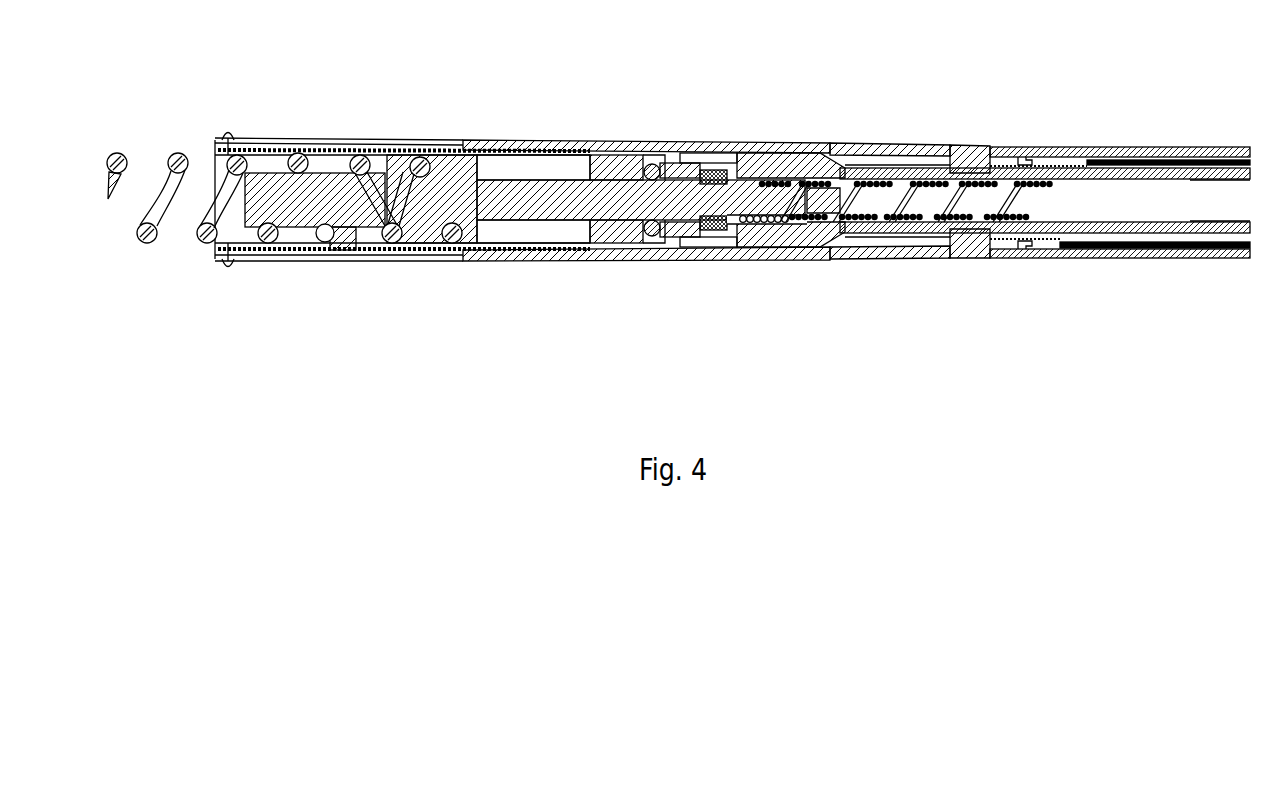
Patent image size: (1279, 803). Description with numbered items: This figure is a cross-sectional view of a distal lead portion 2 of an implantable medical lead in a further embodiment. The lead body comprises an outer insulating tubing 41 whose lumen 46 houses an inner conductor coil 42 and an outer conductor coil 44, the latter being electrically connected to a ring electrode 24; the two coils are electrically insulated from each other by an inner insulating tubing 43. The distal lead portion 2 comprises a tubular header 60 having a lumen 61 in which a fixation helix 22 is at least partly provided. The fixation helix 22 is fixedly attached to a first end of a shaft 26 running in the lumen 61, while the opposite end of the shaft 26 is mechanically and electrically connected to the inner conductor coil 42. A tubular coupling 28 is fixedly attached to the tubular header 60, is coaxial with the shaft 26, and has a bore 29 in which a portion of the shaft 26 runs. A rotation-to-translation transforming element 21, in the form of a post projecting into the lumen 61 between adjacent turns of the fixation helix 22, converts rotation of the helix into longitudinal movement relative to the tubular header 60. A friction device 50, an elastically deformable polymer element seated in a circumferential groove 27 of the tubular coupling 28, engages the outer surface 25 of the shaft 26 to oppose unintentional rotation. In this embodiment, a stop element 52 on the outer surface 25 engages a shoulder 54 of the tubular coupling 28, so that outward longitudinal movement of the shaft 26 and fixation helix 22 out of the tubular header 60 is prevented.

The distal lead portion 2 is at (543, 103).
The rotation-to-translation transforming element 21 is at (341, 241).
The fixation helix 22 is at (175, 154).
The ring electrode 24 is at (960, 146).
The outer surface of the shaft 25 is at (542, 177).
The shaft 26 is at (523, 211).
The circumferential groove 27 is at (654, 240).
The tubular coupling 28 is at (621, 241).
The bore of the tubular coupling 29 is at (738, 228).
The outer insulating tubing 41 is at (591, 139).
The inner conductor coil 42 is at (1054, 184).
The inner insulating tubing 43 is at (1151, 226).
The outer conductor coil 44 is at (1208, 159).
The lumen of the lead body 46 is at (1189, 202).
The friction device 50 is at (655, 165).
The stop element 52 is at (717, 172).
The shoulder 54 is at (694, 244).
The tubular header 60 is at (436, 146).
The lumen of the tubular header 61 is at (553, 234).